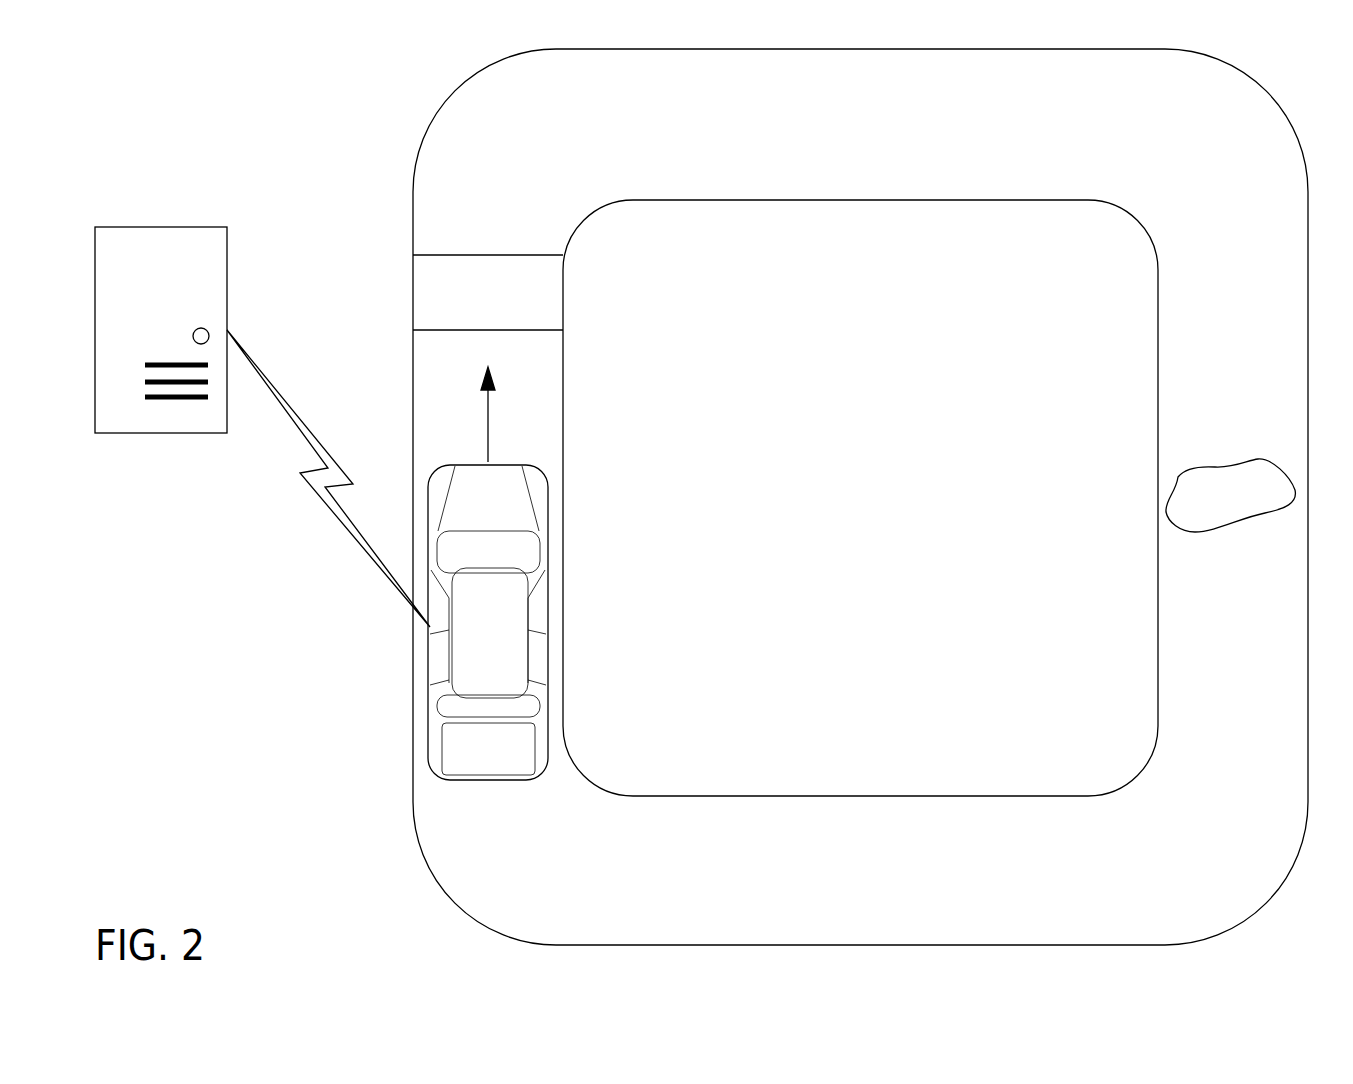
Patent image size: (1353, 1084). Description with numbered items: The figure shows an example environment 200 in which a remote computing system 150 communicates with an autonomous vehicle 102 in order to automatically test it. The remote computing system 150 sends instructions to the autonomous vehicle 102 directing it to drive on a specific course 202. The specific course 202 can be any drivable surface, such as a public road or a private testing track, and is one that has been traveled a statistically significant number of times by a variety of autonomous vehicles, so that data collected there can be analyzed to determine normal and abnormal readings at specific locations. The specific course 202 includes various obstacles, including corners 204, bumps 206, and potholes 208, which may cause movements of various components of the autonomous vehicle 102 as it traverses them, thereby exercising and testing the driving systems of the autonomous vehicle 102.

The environment 200 is at (195, 97).
The corner 204 is at (470, 78).
The specific course 202 is at (948, 162).
The bump 206 is at (540, 295).
The pothole 208 is at (1210, 498).
The autonomous vehicle 102 is at (506, 641).
The remote computing system 150 is at (178, 347).